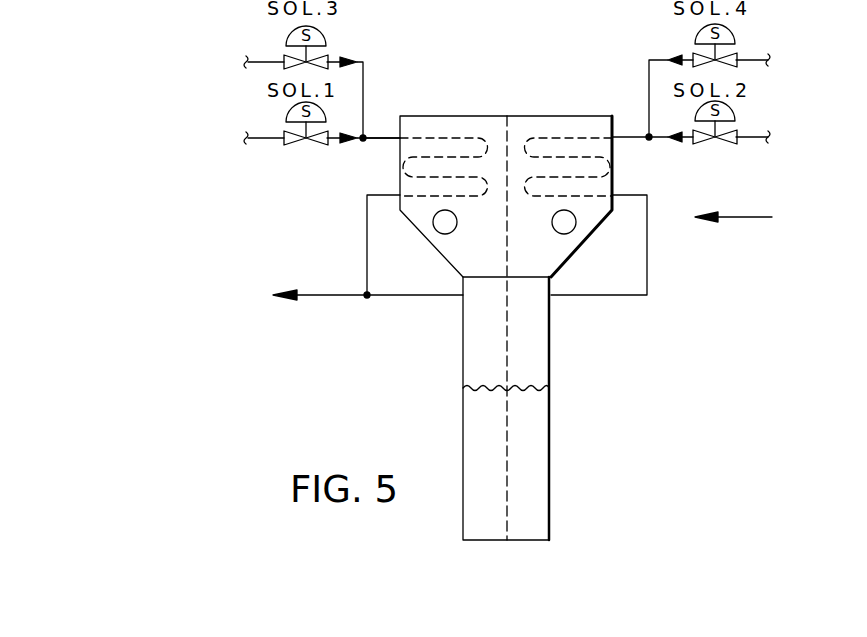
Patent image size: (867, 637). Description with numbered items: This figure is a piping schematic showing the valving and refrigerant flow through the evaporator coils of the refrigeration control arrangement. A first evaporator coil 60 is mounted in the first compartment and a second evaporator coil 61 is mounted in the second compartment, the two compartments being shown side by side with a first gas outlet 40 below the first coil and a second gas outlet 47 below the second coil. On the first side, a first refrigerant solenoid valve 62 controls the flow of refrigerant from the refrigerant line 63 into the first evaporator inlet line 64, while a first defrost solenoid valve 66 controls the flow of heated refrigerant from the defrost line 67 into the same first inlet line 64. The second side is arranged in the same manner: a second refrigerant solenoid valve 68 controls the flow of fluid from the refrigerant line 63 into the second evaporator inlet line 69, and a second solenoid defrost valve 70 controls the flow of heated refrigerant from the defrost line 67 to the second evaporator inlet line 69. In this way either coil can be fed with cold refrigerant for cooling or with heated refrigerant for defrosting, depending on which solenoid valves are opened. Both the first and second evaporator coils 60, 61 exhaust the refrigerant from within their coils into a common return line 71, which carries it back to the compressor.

The first gas outlet 40 is at (436, 231).
The second gas outlet 47 is at (573, 231).
The first evaporator coil 60 is at (447, 136).
The second evaporator coil 61 is at (553, 136).
The first refrigerant solenoid valve 62 is at (287, 110).
The refrigerant line 63 is at (268, 140).
The first evaporator inlet line 64 is at (387, 137).
The first defrost solenoid valve 66 is at (327, 36).
The defrost line 67 is at (264, 60).
The second refrigerant solenoid valve 68 is at (735, 110).
The second evaporator inlet line 69 is at (630, 140).
The second solenoid defrost valve 70 is at (693, 37).
The common return line 71 is at (420, 296).